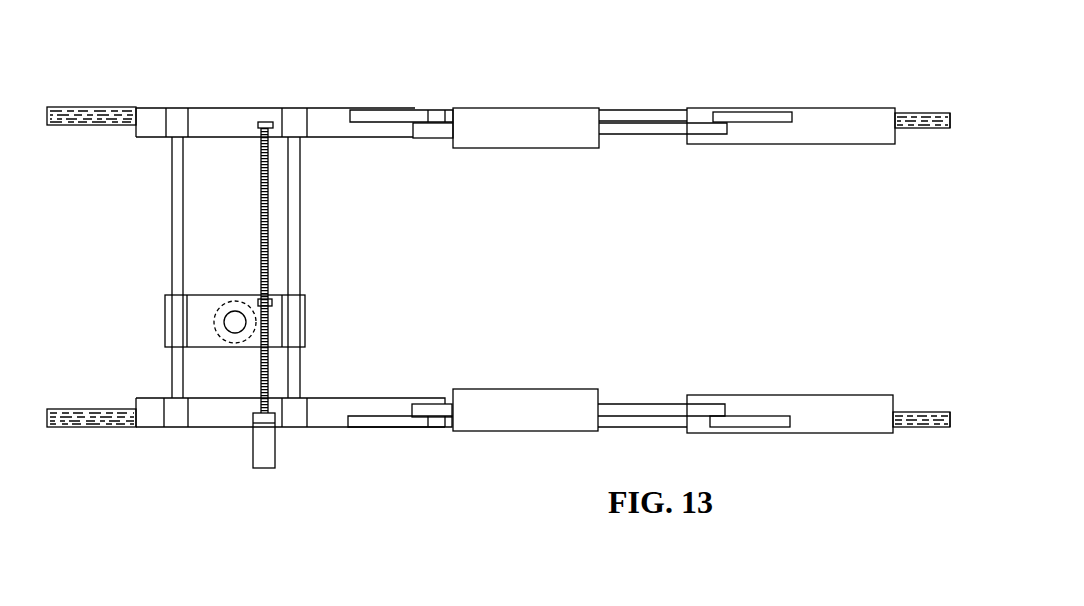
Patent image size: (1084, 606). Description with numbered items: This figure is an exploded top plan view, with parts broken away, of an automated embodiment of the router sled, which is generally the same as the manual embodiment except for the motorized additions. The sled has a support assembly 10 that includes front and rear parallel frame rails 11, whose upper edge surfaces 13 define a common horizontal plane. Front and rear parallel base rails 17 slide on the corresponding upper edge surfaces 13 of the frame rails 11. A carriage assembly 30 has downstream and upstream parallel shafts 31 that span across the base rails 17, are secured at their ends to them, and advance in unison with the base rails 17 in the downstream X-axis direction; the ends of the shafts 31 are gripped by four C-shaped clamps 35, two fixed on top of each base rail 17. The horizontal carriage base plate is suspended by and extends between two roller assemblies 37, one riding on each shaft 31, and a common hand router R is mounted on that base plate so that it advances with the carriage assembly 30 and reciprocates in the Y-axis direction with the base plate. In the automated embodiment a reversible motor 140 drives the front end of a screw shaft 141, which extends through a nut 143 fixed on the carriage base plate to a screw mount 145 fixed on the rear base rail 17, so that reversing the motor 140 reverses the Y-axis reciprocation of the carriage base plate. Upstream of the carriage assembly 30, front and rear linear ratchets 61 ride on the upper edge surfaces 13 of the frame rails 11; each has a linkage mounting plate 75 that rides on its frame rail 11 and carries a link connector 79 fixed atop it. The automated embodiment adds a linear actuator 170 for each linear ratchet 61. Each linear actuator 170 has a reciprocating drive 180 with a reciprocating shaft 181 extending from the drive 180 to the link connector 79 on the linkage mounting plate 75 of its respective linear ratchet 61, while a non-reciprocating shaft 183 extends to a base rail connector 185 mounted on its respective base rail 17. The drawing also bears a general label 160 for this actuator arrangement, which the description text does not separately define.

The support assembly 10 is at (98, 264).
The frame rails 11 is at (922, 128).
The upper edge surfaces 13 is at (923, 110).
The base rails 17 is at (328, 108).
The carriage assembly 30 is at (222, 215).
The parallel shafts 31 is at (172, 197).
The C-shaped clamps 35 is at (177, 114).
The roller assemblies 37 is at (305, 322).
The linear ratchets 61 is at (835, 160).
The linkage mounting plate 75 is at (770, 143).
The link connector 79 is at (762, 112).
The reversible motor 140 is at (267, 468).
The screw shaft 141 is at (260, 242).
The nut 143 is at (272, 298).
The screw mount 145 is at (258, 128).
The extension mechanism 160 is at (553, 267).
The linear actuator 170 is at (492, 92).
The reciprocating drive 180 is at (527, 148).
The reciprocating shaft 181 is at (643, 118).
The non-reciprocating shaft 183 is at (436, 134).
The base rail connector 185 is at (383, 108).
The hand router R is at (228, 343).